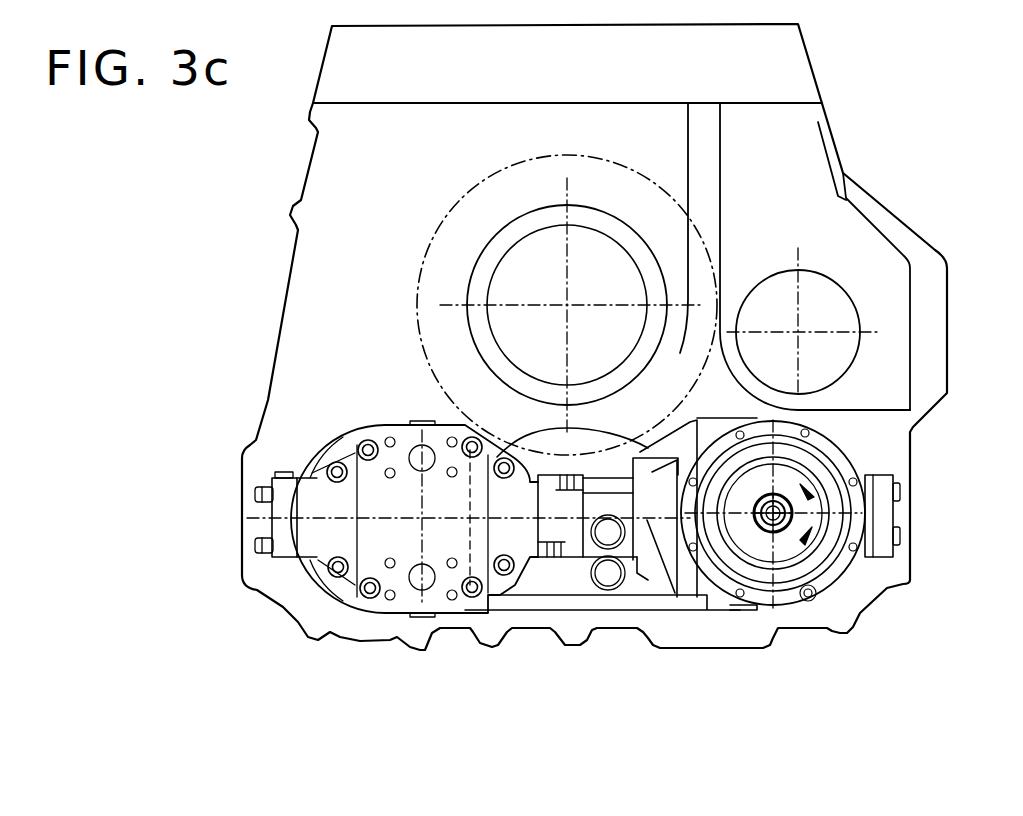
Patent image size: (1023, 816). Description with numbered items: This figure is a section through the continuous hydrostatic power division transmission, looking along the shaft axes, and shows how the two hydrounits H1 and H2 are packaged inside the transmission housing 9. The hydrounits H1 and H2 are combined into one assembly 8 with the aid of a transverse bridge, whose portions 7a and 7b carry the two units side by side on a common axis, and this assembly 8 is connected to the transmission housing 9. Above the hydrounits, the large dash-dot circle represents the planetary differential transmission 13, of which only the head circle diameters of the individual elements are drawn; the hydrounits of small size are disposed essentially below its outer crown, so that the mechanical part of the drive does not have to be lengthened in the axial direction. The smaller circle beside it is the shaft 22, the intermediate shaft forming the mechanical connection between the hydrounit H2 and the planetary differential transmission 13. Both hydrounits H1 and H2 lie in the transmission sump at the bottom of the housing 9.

The transmission housing 9 is at (912, 340).
The planetary differential transmission 13 is at (618, 163).
The shaft 22 is at (815, 322).
The assembly 8 is at (895, 488).
The hydrounit H1 is at (400, 523).
The hydrounit H2 is at (783, 520).
The pump mounting plate 7a is at (540, 600).
The pump mounting bracket 7b is at (636, 508).